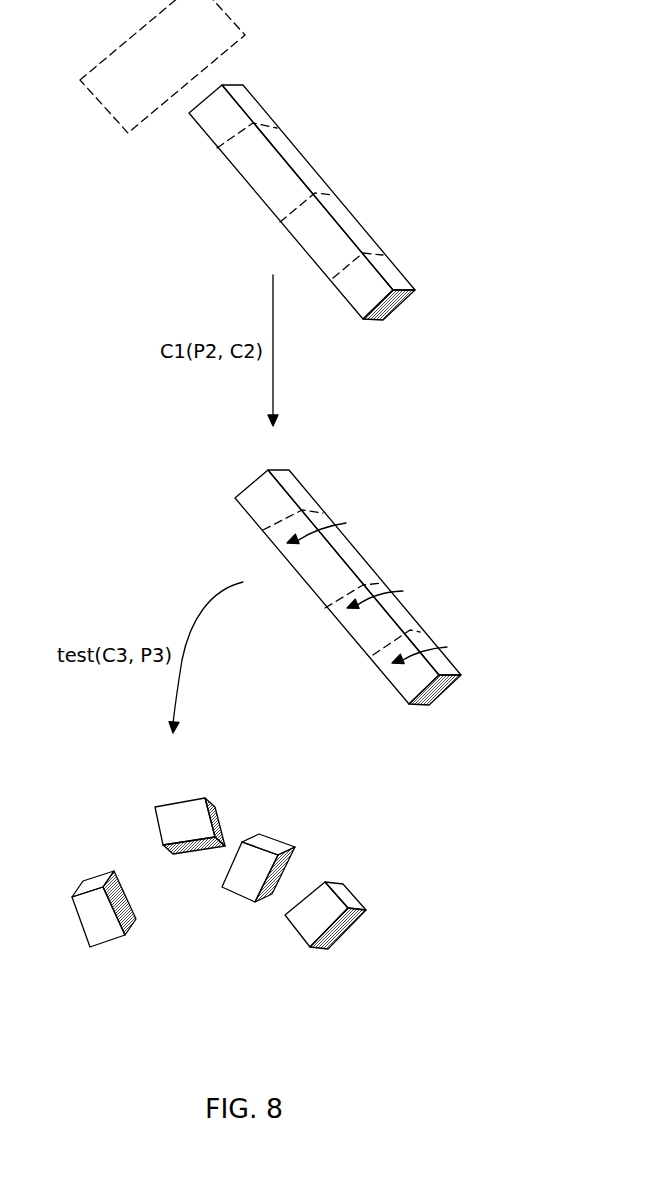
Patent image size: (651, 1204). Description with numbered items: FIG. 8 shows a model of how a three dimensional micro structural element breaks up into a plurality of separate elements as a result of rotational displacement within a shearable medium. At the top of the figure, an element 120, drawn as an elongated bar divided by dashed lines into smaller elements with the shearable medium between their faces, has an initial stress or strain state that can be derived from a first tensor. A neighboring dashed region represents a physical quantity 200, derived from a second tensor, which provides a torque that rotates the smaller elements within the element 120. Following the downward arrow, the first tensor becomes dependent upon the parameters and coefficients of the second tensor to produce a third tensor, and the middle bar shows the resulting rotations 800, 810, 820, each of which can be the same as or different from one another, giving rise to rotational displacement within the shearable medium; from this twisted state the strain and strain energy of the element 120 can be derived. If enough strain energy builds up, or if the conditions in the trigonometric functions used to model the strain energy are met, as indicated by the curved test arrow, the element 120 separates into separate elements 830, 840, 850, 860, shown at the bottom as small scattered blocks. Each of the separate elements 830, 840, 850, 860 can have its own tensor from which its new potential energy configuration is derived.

The element 120 is at (288, 148).
The physical quantity 200 is at (118, 47).
The rotation 800 is at (338, 530).
The rotation 810 is at (390, 603).
The rotation 820 is at (435, 693).
The separate element 830 is at (337, 930).
The separate element 840 is at (268, 845).
The separate element 850 is at (217, 812).
The separate element 860 is at (105, 940).